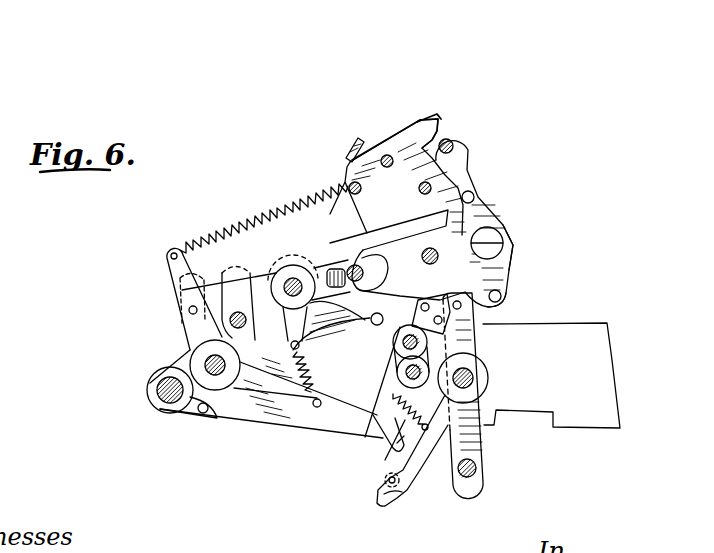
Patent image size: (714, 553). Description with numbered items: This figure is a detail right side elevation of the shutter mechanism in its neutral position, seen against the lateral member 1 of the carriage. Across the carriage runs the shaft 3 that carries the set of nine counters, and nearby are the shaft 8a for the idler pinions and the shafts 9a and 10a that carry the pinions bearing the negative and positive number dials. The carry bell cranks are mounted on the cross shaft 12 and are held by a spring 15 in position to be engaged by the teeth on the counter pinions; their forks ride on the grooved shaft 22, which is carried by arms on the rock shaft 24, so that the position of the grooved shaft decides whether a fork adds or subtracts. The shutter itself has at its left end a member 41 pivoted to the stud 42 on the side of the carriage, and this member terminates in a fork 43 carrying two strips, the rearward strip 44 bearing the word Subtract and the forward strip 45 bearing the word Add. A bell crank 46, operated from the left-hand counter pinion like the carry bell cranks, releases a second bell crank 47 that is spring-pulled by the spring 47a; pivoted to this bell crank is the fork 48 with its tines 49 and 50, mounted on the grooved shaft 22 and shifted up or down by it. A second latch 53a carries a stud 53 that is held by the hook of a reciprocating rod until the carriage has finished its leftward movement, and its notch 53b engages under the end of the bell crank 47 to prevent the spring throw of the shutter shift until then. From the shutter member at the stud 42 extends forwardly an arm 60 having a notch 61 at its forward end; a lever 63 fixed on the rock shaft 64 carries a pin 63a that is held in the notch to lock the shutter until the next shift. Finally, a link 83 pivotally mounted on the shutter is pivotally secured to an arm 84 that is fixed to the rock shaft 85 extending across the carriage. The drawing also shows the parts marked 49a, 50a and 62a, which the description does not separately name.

The lateral member 1 is at (597, 333).
The shaft 3 is at (422, 252).
The shaft 8a is at (419, 188).
The shaft 9a is at (451, 143).
The shaft 10a is at (385, 156).
The cross shaft 12 is at (470, 387).
The spring 15 is at (423, 427).
The grooved shaft 22 is at (356, 265).
The rock shaft 24 is at (288, 286).
The member 41 is at (462, 170).
The stud 42 is at (500, 236).
The fork 43 is at (402, 143).
The rearward strip 44 is at (432, 116).
The forward strip 45 is at (348, 150).
The bell crank 46 is at (412, 453).
The bell crank 47 is at (285, 392).
The spring 47a is at (278, 208).
The fork 48 is at (268, 262).
The tine 49 is at (430, 213).
The hole 49a is at (475, 197).
The tine 50 is at (498, 307).
The hole 50a is at (503, 297).
The stud 53 is at (393, 477).
The latch 53a is at (400, 492).
The notch 53b is at (400, 446).
The arm 60 is at (506, 267).
The notch 61 is at (322, 400).
The pin 62a is at (397, 372).
The lever 63 is at (317, 409).
The pin 63a is at (370, 320).
The shaft 64 is at (394, 395).
The link 83 is at (477, 320).
The arm 84 is at (479, 355).
The rock shaft 85 is at (340, 363).